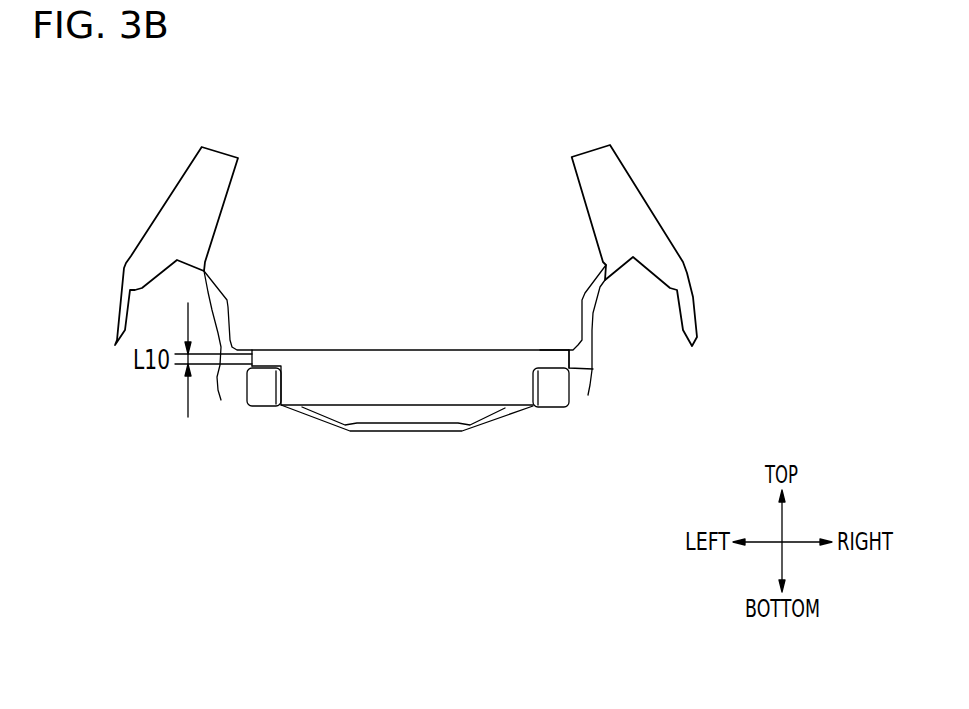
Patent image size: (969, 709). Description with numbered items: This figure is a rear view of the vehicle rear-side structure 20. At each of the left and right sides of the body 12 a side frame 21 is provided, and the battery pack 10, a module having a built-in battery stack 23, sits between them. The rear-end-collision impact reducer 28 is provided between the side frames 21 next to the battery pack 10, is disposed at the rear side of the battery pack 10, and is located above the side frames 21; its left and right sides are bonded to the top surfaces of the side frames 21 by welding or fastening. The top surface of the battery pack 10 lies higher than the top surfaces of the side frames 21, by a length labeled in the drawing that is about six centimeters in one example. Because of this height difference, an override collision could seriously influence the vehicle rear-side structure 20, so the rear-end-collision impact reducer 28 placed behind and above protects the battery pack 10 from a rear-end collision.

The battery pack 10 is at (422, 315).
The body 12 is at (205, 147).
The vehicle rear-side structure 20 is at (407, 456).
The side frame 21 is at (272, 412).
The battery stack 23 is at (490, 410).
The rear-end-collision impact reducer 28 is at (553, 350).